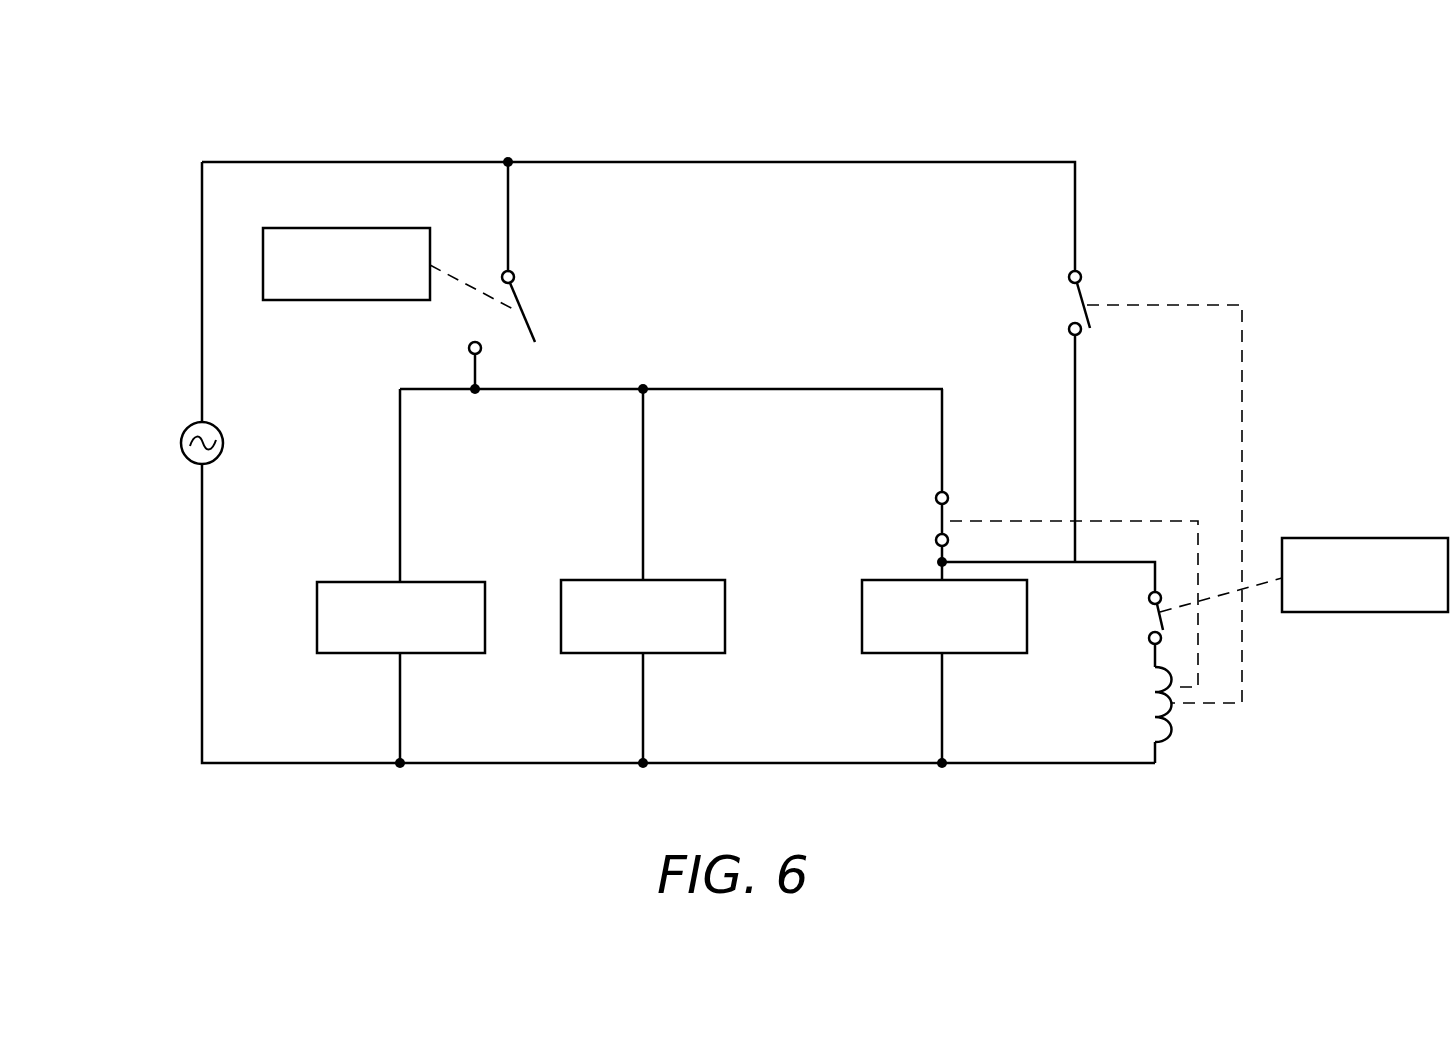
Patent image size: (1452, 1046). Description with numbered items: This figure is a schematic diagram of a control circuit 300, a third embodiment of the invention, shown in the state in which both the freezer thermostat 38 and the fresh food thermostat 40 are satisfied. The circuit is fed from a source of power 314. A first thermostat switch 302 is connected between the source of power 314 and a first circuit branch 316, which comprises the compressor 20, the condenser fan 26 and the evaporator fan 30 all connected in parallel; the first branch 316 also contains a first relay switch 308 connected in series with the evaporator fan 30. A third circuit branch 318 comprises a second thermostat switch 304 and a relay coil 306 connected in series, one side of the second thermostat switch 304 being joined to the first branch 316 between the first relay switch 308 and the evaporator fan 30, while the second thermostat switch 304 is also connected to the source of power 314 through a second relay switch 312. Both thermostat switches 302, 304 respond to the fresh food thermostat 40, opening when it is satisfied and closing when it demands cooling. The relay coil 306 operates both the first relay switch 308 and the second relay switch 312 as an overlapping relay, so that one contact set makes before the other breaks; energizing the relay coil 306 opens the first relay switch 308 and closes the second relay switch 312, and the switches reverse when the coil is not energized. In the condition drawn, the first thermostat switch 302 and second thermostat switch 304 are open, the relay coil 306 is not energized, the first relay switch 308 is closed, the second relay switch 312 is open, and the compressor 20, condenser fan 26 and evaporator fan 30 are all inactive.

The control circuit 300 is at (1280, 166).
The source of power 314 is at (184, 457).
The first thermostat switch 302 is at (513, 293).
The freezer thermostat 38 is at (281, 301).
The first circuit branch 316 is at (458, 366).
The second relay switch 312 is at (1083, 291).
The first relay switch 308 is at (940, 512).
The third circuit branch 318 is at (1113, 548).
The compressor 20 is at (378, 582).
The condenser fan 26 is at (700, 580).
The evaporator fan 30 is at (898, 653).
The second thermostat switch 304 is at (1150, 612).
The relay coil 306 is at (1147, 703).
The fresh food thermostat 40 is at (1405, 612).